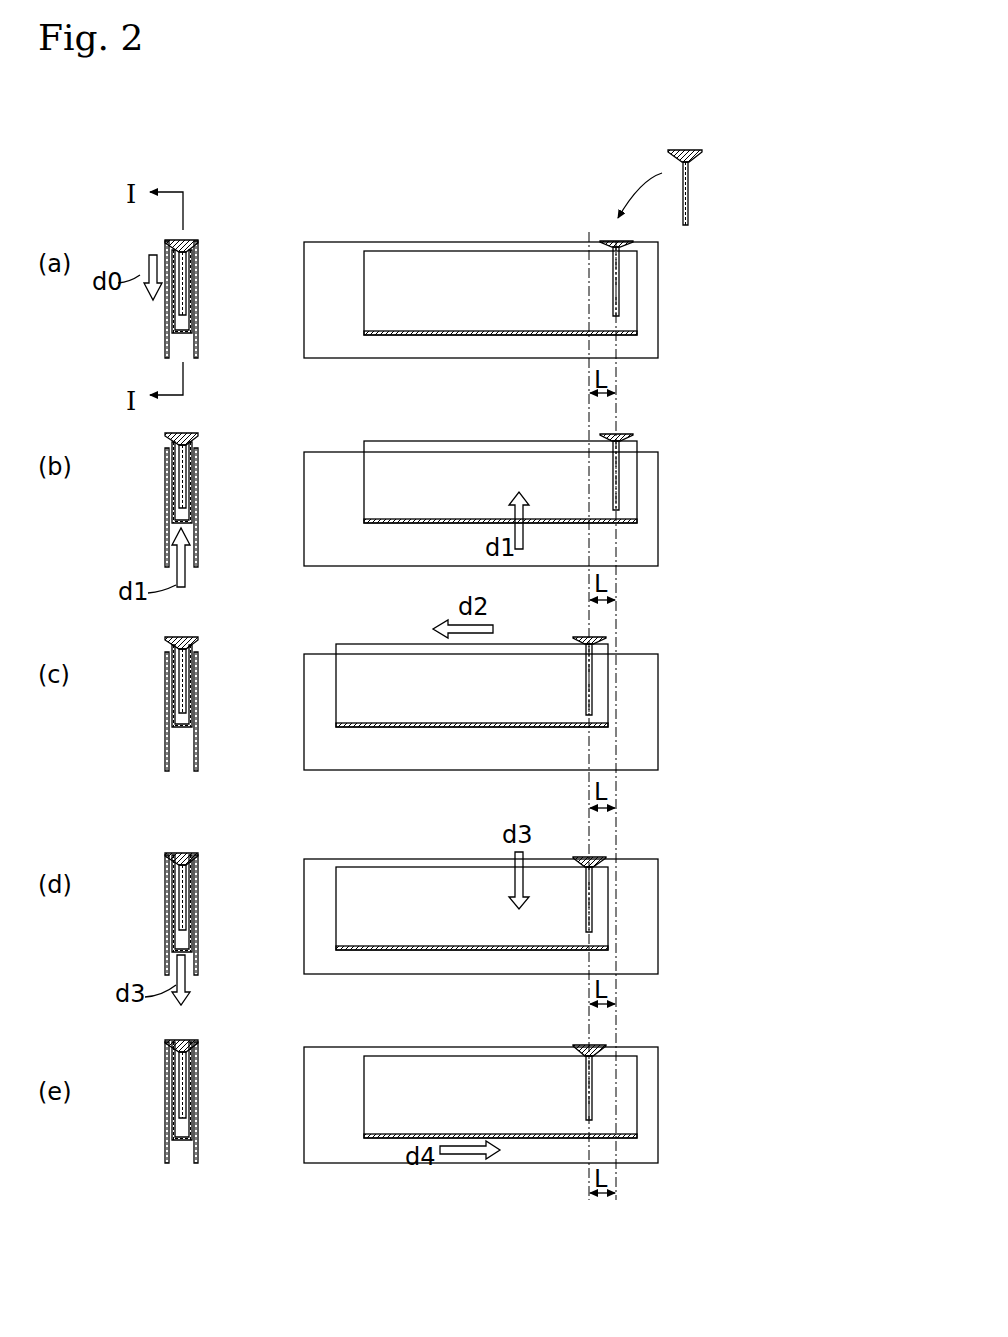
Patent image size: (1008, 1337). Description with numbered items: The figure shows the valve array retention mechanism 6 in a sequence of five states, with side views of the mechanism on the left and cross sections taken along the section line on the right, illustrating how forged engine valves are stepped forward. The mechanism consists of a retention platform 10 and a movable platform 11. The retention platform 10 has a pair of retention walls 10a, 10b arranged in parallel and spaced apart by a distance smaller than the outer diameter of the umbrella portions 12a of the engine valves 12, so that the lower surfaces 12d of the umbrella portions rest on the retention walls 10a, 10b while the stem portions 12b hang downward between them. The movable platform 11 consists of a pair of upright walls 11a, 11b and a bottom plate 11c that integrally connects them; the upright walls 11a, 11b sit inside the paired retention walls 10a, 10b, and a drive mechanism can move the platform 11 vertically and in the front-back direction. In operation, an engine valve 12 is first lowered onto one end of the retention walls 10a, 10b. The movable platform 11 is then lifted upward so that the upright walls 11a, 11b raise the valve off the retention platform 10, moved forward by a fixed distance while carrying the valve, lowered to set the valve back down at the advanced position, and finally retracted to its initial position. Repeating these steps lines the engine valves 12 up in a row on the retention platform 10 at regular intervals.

The valve array retention mechanism 6 is at (190, 205).
The retention platform 10 is at (381, 695).
The retention wall 10a is at (167, 330).
The retention wall 10b is at (196, 350).
The movable platform 11 is at (400, 662).
The upright wall 11a is at (178, 322).
The upright wall 11b is at (192, 300).
The bottom plate 11c is at (177, 332).
The engine valve 12 is at (433, 604).
The umbrella portion 12a is at (185, 243).
The stem portion 12b is at (186, 266).
The lower surface of umbrella portion 12d is at (196, 245).